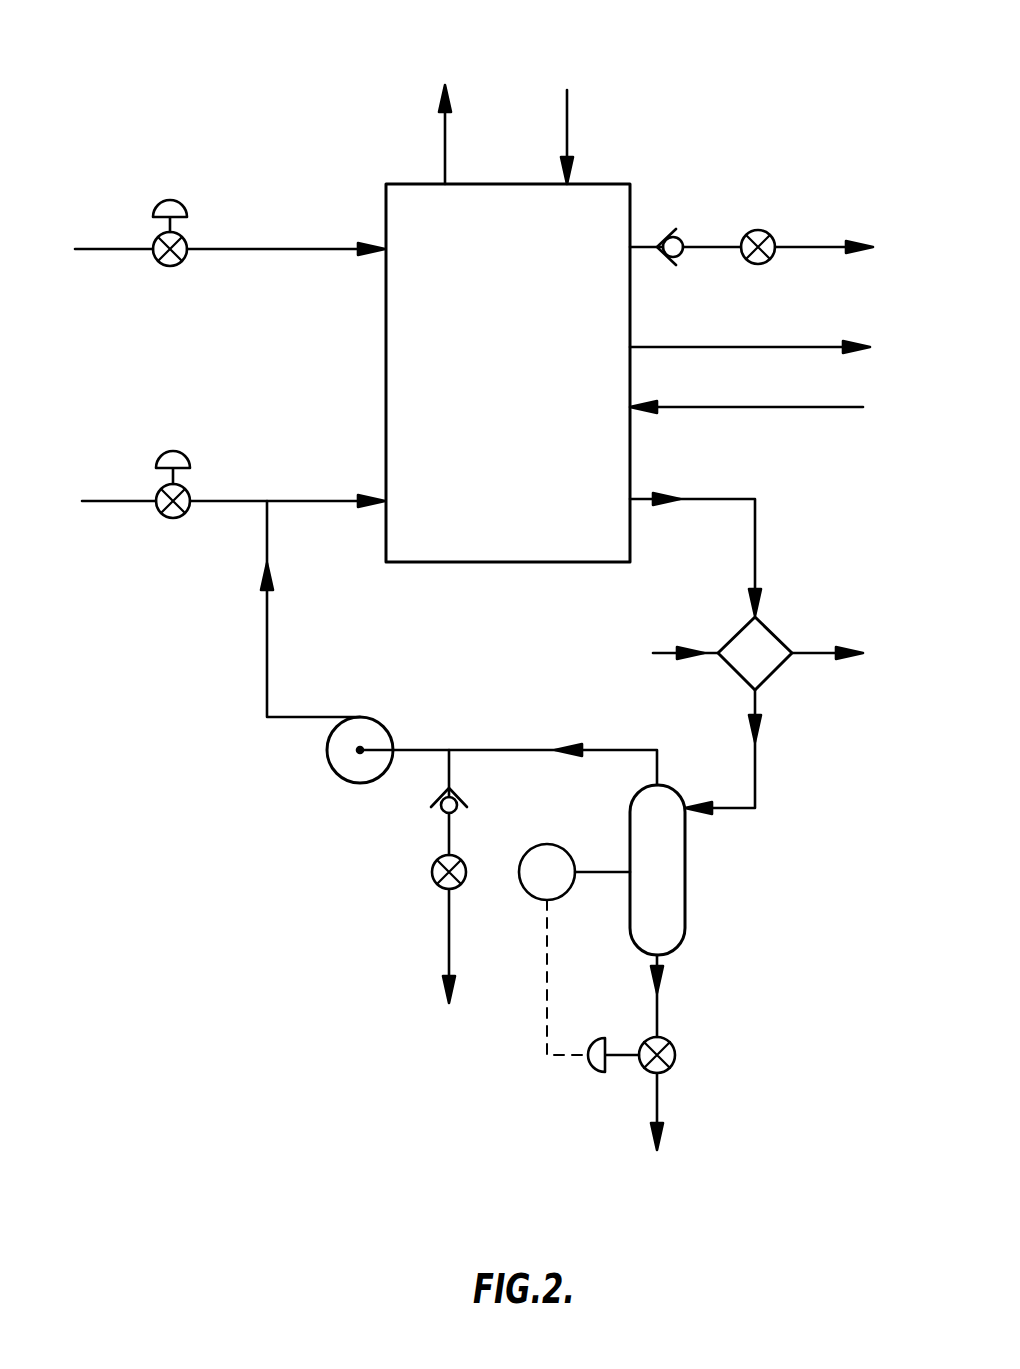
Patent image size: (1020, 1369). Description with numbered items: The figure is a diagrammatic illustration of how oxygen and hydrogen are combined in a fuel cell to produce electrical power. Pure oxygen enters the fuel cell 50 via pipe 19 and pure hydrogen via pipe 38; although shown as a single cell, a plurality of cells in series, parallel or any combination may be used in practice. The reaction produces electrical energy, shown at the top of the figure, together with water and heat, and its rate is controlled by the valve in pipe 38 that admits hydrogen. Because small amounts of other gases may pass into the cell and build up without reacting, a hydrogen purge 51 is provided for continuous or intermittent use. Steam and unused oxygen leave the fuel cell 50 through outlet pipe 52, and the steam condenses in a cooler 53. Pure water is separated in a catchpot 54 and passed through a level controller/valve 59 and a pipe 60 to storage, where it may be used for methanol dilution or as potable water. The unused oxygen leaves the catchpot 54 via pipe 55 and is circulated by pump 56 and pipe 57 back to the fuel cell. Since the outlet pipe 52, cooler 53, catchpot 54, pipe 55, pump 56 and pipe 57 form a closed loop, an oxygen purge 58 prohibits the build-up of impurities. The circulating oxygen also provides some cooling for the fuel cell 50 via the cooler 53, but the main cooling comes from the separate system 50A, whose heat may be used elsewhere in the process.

The oxygen pipe 19 is at (135, 501).
The hydrogen pipe 38 is at (135, 249).
The fuel cell 50 is at (397, 388).
The separate cooling system 50A is at (785, 347).
The hydrogen purge 51 is at (812, 247).
The outlet pipe 52 is at (755, 530).
The cooler 53 is at (765, 643).
The catchpot 54 is at (670, 838).
The oxygen pipe 55 is at (657, 760).
The pump 56 is at (340, 748).
The return pipe 57 is at (267, 640).
The oxygen purge 58 is at (449, 910).
The level controller/valve 59 is at (557, 852).
The water pipe 60 is at (660, 1106).